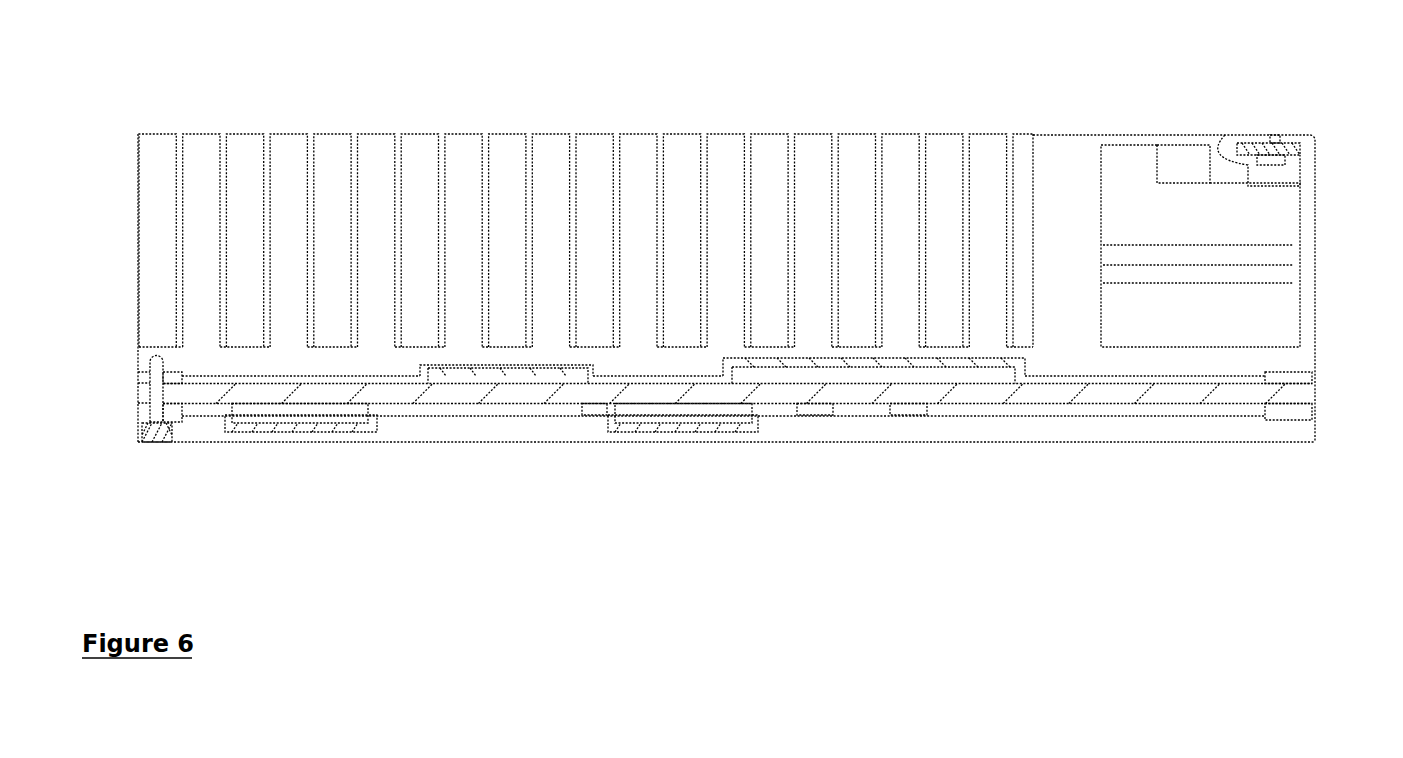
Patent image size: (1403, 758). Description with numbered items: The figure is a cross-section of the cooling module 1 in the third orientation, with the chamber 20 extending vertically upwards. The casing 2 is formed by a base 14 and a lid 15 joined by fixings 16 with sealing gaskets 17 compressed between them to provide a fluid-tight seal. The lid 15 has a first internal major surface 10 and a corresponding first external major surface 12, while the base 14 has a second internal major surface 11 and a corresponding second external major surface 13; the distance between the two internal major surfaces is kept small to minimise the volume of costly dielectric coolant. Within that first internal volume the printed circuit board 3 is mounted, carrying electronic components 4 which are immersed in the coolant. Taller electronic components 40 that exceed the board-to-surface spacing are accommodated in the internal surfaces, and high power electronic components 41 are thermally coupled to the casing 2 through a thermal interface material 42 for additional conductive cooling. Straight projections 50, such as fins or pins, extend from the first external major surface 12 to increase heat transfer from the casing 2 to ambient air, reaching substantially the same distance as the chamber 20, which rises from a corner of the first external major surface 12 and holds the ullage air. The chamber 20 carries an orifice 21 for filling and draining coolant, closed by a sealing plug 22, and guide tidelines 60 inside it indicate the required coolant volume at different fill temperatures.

The cooling module 1 is at (1293, 410).
The casing 2 is at (1204, 464).
The printed circuit board 3 is at (1030, 403).
The electronic components 4 is at (243, 412).
The first internal major surface 10 is at (708, 245).
The second internal major surface 11 is at (510, 400).
The first external major surface 12 is at (335, 350).
The second external major surface 13 is at (560, 443).
The base 14 is at (140, 428).
The lid 15 is at (150, 358).
The fixings 16 is at (160, 440).
The sealing gaskets 17 is at (140, 383).
The chamber 20 is at (1241, 198).
The orifice 21 is at (1226, 137).
The sealing plug 22 is at (1278, 137).
The taller electronic components 40 is at (327, 413).
The high power electronic components 41 is at (287, 413).
The thermal interface material 42 is at (553, 365).
The projections 50 is at (157, 146).
The guide tidelines 60 is at (1292, 245).